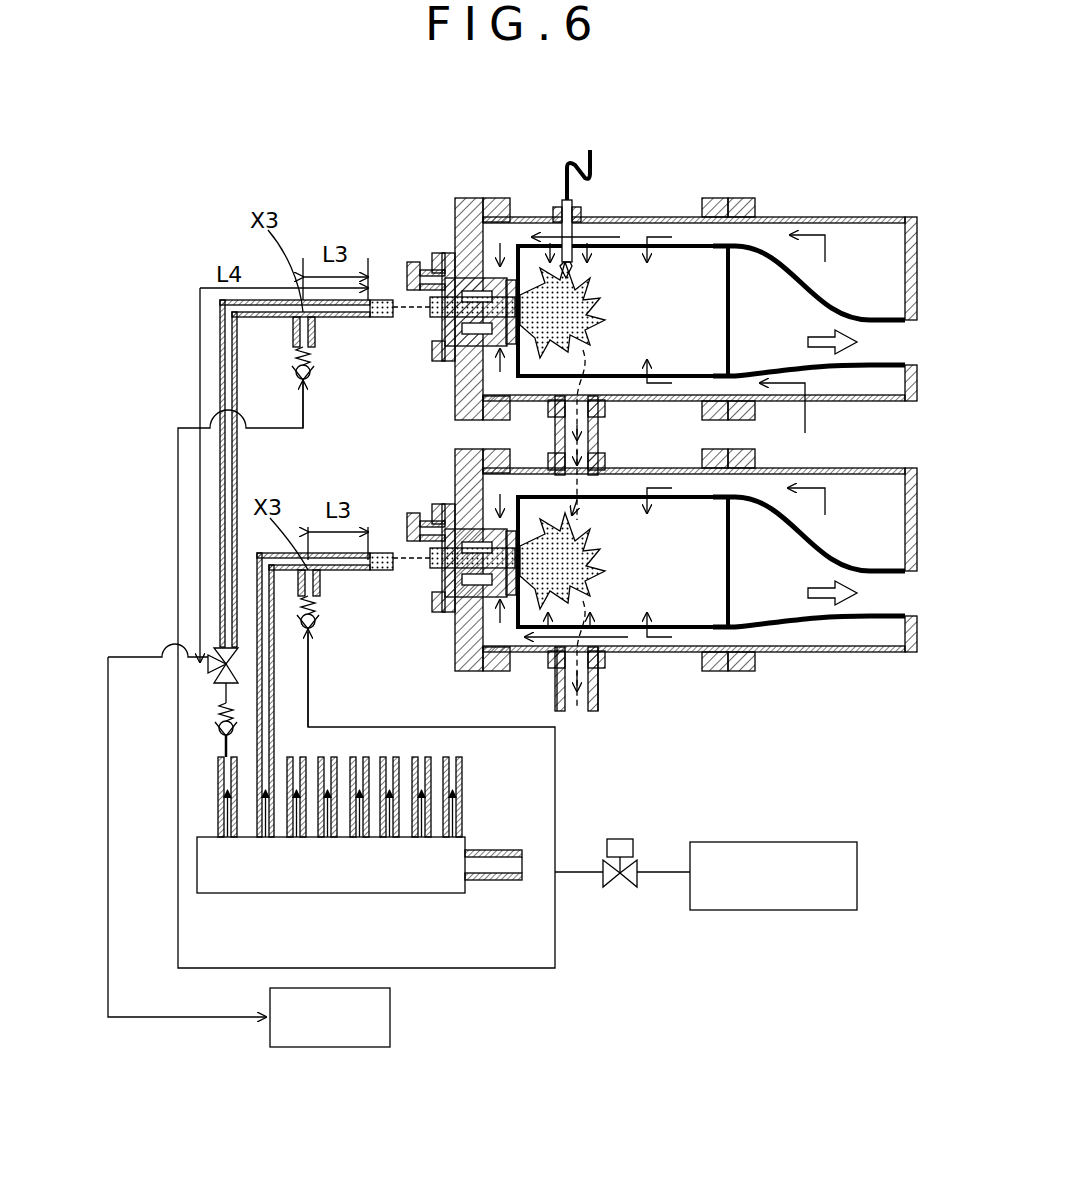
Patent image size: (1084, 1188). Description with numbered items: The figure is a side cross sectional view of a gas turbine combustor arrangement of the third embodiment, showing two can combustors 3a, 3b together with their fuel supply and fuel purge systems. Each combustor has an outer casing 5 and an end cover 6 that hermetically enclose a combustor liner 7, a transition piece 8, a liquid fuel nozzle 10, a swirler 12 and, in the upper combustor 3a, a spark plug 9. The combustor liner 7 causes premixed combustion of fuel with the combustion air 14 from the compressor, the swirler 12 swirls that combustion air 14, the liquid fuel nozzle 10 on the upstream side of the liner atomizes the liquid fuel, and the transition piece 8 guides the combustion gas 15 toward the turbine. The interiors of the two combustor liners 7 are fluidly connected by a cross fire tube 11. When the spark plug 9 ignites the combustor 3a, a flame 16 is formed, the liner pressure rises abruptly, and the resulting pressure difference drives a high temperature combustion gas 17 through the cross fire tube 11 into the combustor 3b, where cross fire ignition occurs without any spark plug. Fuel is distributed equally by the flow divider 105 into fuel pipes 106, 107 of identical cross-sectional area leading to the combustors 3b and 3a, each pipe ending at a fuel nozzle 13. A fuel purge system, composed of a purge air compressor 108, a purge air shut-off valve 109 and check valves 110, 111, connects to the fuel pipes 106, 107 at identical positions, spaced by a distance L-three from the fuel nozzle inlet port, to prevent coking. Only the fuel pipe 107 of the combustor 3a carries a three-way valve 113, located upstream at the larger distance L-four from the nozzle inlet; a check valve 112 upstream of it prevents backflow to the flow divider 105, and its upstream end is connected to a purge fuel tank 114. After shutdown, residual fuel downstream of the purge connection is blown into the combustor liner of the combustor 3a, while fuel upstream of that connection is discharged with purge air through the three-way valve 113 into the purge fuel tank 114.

The combustor 3a is at (457, 309).
The combustor 3b is at (457, 560).
The outer casing 5 is at (663, 217).
The end cover 6 is at (466, 198).
The combustor liner 7 is at (623, 311).
The transition piece 8 is at (809, 311).
The spark plug 9 is at (568, 212).
The liquid fuel nozzle 10 is at (490, 277).
The cross fire tube 11 is at (580, 428).
The swirler 12 is at (523, 243).
The fuel nozzle 13 is at (452, 413).
The combustion air 14 is at (815, 217).
The combustion gas 15 is at (827, 333).
The flame 16 is at (562, 310).
The high temperature combustion gas 17 is at (577, 350).
The flow divider 105 is at (359, 825).
The fuel pipe 106 is at (357, 553).
The fuel pipe 107 is at (356, 318).
The purge air compressor 108 is at (773, 876).
The purge air shut-off valve 109 is at (612, 893).
The check valve 110 is at (320, 614).
The check valve 111 is at (315, 385).
The check valve 112 is at (222, 727).
The three-way valve 113 is at (213, 660).
The purge fuel tank 114 is at (330, 1017).